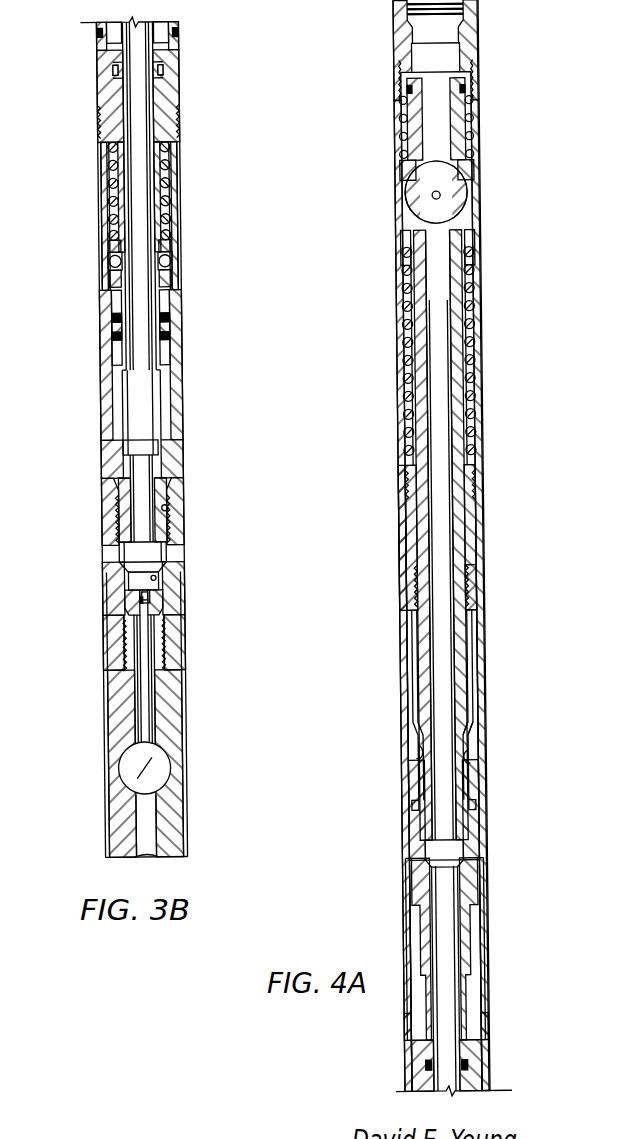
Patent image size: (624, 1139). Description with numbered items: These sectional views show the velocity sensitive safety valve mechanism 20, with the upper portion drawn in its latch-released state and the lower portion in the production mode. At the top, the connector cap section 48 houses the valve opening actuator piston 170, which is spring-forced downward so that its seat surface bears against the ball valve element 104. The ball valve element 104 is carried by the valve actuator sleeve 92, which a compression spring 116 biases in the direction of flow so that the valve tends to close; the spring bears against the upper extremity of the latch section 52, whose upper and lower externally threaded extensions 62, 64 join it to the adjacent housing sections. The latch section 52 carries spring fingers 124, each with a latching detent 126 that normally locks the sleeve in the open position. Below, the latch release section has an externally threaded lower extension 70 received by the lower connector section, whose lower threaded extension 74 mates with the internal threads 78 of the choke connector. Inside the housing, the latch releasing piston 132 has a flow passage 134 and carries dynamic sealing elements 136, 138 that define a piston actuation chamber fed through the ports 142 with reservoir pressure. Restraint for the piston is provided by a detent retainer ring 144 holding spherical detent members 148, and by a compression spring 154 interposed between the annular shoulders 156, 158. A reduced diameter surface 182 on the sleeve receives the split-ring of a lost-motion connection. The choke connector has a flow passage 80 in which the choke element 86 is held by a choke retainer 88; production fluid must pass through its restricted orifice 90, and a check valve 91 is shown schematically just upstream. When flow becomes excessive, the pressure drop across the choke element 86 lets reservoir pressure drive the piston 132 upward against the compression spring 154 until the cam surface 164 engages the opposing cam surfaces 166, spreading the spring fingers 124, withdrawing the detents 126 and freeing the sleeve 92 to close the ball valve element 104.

In FIG. 3B, the ports 142 is at (181, 35).
In FIG. 4A, the ports 142 is at (488, 1024).
In FIG. 3B, the dynamic sealing element 138 is at (163, 71).
In FIG. 4A, the dynamic sealing element 138 is at (468, 1066).
In FIG. 3B, the externally threaded lower extension 70 is at (170, 125).
In FIG. 3B, the annular shoulder 156 is at (103, 151).
In FIG. 3B, the compression spring 154 is at (111, 207).
In FIG. 3B, the annular shoulder 158 is at (171, 239).
In FIG. 3B, the detent members 148 is at (172, 262).
In FIG. 3B, the detent retainer ring 144 is at (110, 283).
In FIG. 3B, the latch releasing piston 132 is at (158, 385).
In FIG. 4A, the latch releasing piston 132 is at (410, 893).
In FIG. 3B, the flow passage 134 is at (159, 429).
In FIG. 3B, the internal threads 78 is at (168, 508).
In FIG. 3B, the lower threaded extension 74 is at (118, 520).
In FIG. 3B, the flow passage 80 is at (156, 579).
In FIG. 3B, the restricted passage or orifice 90 is at (124, 600).
In FIG. 3B, the choke element 86 is at (163, 603).
In FIG. 3B, the choke retainer 88 is at (160, 650).
In FIG. 3B, the check valve 91 is at (166, 756).
In FIG. 4A, the connector cap section 48 is at (462, 31).
In FIG. 4A, the valve opening actuator piston 170 is at (468, 129).
In FIG. 4A, the velocity sensitive safety valve mechanism 20 is at (487, 171).
In FIG. 4A, the ball valve element 104 is at (410, 194).
In FIG. 4A, the valve actuator sleeve 92 is at (408, 300).
In FIG. 4A, the compression spring 116 is at (472, 336).
In FIG. 4A, the upper externally threaded extension 62 is at (470, 478).
In FIG. 4A, the latch section 52 is at (404, 540).
In FIG. 4A, the lower externally threaded extension 64 is at (478, 600).
In FIG. 4A, the spring fingers 124 is at (472, 681).
In FIG. 4A, the latching detent 126 is at (472, 736).
In FIG. 4A, the cam surface 164 is at (412, 748).
In FIG. 4A, the cam surfaces 166 is at (474, 760).
In FIG. 4A, the reduced diameter surface 182 is at (414, 803).
In FIG. 4A, the dynamic sealing element 136 is at (474, 810).